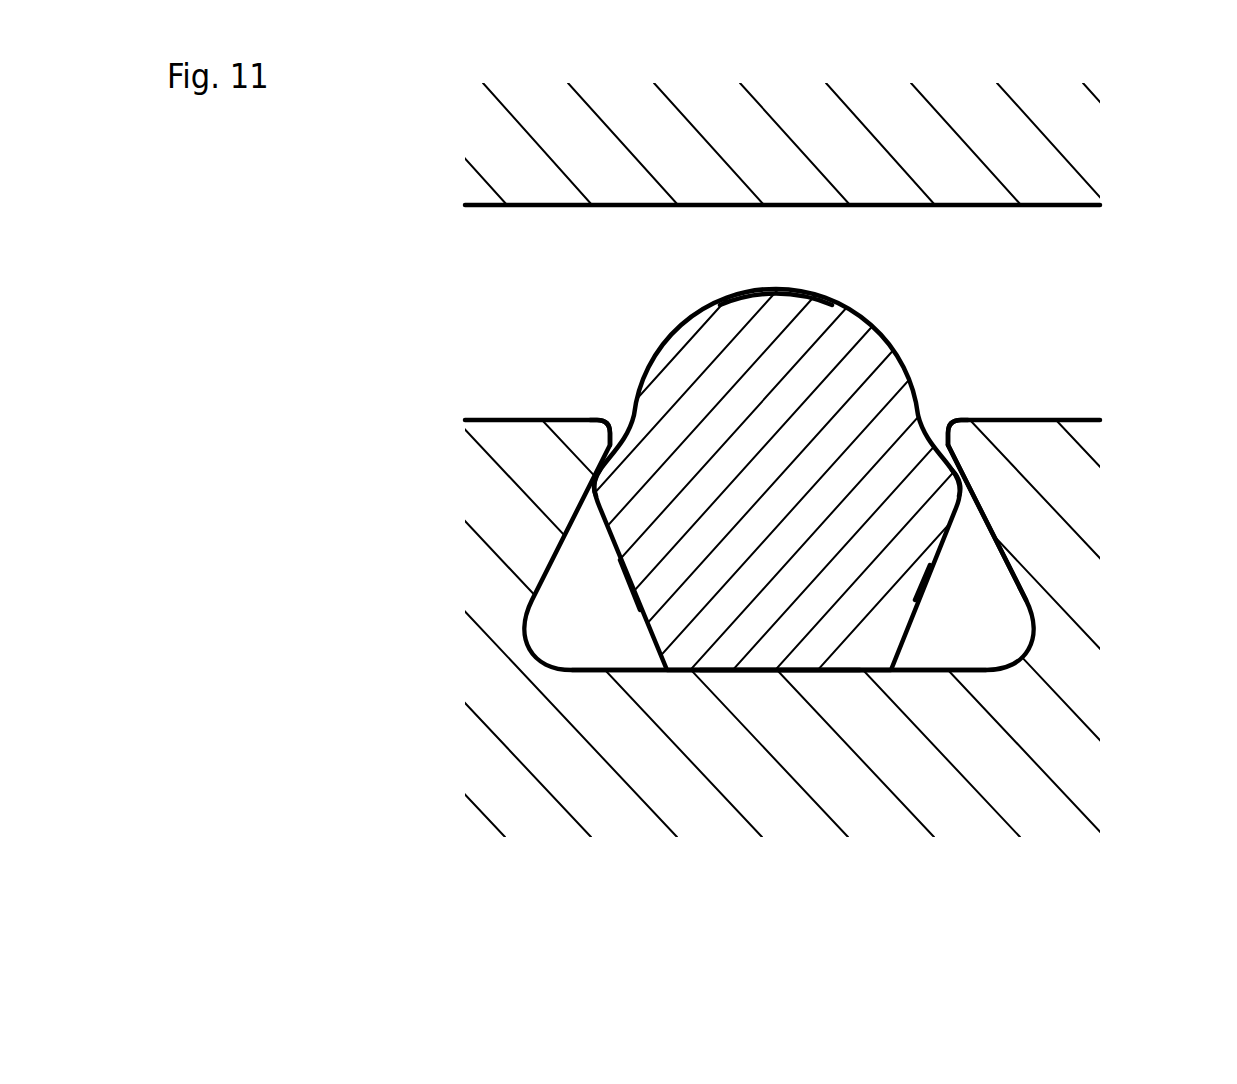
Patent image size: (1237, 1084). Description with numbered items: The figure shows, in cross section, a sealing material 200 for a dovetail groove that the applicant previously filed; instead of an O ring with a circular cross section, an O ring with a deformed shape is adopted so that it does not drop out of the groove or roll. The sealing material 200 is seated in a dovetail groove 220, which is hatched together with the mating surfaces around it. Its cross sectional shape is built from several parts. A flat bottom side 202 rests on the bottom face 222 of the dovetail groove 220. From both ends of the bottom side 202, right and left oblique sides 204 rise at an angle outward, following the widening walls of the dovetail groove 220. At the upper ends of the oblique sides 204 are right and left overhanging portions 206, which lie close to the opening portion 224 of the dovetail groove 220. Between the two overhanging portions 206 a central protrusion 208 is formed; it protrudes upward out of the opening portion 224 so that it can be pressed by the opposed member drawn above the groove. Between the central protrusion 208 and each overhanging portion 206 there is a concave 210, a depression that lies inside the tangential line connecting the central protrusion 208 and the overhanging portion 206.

The sealing material for a dovetail groove 200 is at (692, 296).
The flat bottom side 202 is at (836, 670).
The oblique sides 204 is at (633, 572).
The overhanging portions 206 is at (594, 473).
The central protrusion 208 is at (778, 295).
The concaves 210 is at (611, 443).
The dovetail groove 220 is at (956, 334).
The bottom face 222 is at (934, 670).
The opening portion 224 is at (940, 402).